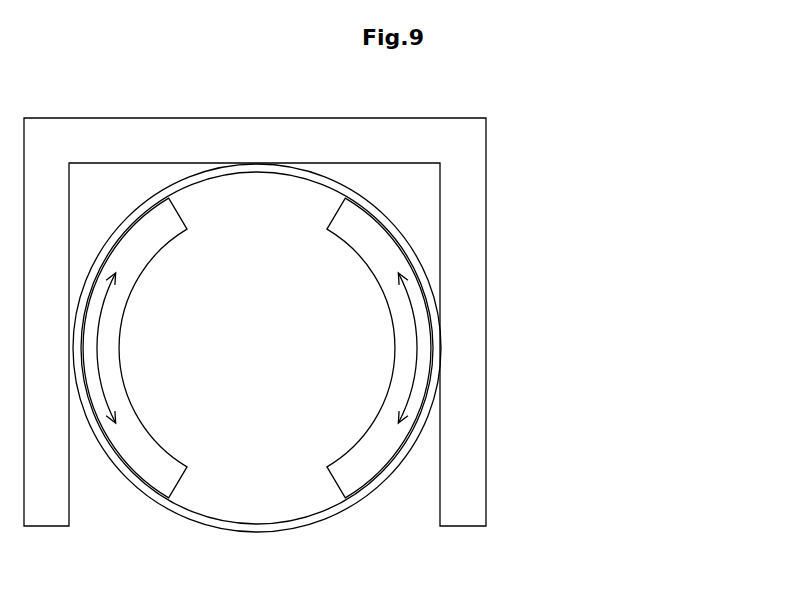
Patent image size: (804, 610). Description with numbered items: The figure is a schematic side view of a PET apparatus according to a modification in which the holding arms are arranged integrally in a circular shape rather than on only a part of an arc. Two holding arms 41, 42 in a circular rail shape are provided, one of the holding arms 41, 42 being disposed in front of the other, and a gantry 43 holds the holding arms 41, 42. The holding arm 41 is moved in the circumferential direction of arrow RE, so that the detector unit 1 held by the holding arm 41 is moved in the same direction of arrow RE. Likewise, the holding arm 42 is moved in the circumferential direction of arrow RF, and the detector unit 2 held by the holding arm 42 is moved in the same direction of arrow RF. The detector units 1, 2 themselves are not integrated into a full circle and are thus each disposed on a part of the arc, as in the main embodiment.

The detector unit 1 is at (356, 257).
The detector unit 2 is at (150, 244).
The holding arm 41 is at (278, 533).
The holding arm 42 is at (257, 374).
The gantry 43 is at (448, 512).
The arrow RE is at (417, 350).
The arrow RF is at (97, 360).